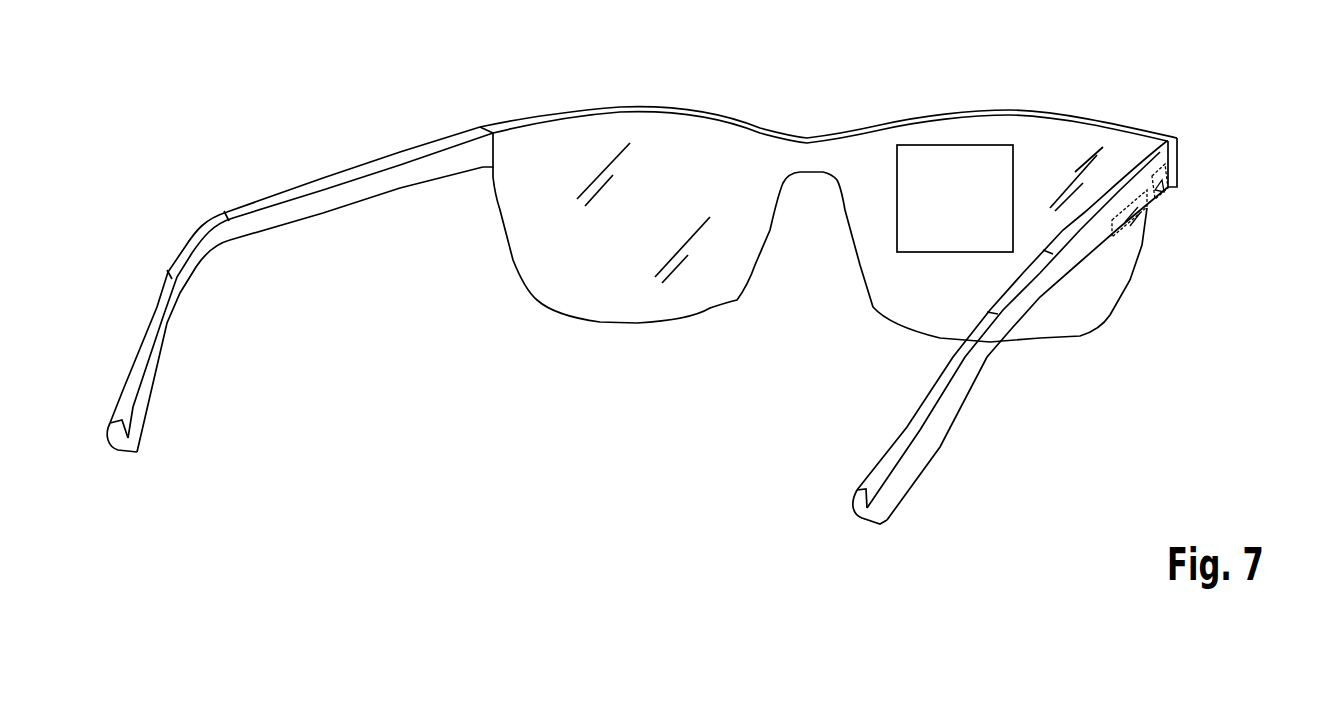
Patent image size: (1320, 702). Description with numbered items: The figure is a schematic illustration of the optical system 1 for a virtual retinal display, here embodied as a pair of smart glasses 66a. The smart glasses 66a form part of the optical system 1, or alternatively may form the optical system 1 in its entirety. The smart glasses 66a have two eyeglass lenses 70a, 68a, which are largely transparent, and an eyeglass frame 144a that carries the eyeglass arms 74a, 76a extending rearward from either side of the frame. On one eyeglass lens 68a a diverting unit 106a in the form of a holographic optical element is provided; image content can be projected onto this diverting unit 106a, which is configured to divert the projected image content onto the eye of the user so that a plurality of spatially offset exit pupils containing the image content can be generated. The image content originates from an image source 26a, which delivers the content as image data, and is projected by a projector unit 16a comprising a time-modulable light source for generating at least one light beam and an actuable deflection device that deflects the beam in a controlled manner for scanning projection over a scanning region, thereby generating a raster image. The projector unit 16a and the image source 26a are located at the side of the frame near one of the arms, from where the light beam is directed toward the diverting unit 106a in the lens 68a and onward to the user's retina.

The optical system 1 is at (704, 273).
The projector unit 16a is at (1167, 199).
The image source 26a is at (1147, 216).
The smart glasses 66a is at (796, 104).
The eyeglass lens 68a is at (650, 273).
The eyeglass lens 70a is at (650, 140).
The eyeglass arm 74a is at (943, 410).
The eyeglass arm 76a is at (328, 192).
The diverting unit 106a is at (958, 170).
The eyeglass frame 144a is at (450, 158).